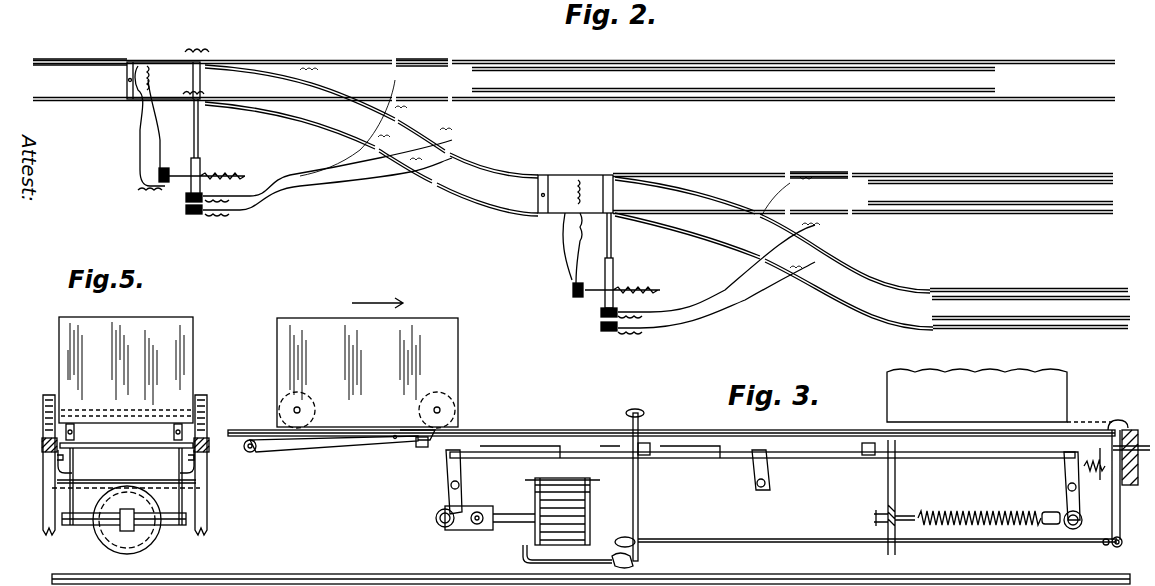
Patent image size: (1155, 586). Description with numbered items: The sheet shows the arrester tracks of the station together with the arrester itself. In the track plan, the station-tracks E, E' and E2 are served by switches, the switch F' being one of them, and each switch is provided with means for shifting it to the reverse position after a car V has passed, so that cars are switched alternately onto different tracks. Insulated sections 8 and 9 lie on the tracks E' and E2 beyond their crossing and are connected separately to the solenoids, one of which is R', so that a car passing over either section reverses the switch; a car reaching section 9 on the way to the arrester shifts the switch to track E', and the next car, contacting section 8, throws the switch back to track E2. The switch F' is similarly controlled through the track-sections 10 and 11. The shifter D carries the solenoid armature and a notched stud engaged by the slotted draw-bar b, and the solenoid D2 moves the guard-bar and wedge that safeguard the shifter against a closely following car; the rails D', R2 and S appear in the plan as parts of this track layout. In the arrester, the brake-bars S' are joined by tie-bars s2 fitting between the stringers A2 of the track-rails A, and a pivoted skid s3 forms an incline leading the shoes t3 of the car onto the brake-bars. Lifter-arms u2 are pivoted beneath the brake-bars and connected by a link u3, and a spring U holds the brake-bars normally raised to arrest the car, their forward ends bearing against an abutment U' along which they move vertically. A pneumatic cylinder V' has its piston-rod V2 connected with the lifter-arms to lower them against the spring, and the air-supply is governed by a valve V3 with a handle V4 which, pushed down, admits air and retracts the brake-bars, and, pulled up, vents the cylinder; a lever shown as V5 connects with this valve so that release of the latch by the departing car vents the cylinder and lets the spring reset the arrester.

In FIG. 2, the station-track E2 is at (1018, 62).
In FIG. 2, the rail section D' is at (80, 46).
In FIG. 2, the insulated section 9 is at (430, 62).
In FIG. 2, the brake-bars S' is at (801, 172).
In FIG. 5, the brake-bars S' is at (126, 435).
In FIG. 3, the brake-bars S' is at (762, 430).
In FIG. 2, the station-track E is at (627, 177).
In FIG. 2, the draw-bar b is at (198, 140).
In FIG. 2, the shifter D is at (414, 225).
In FIG. 2, the solenoid D2 is at (160, 178).
In FIG. 2, the solenoid R' is at (483, 234).
In FIG. 2, the relay contact R2 is at (184, 210).
In FIG. 2, the insulated section 8 is at (430, 142).
In FIG. 2, the switch F' is at (575, 178).
In FIG. 2, the station-track E' is at (863, 178).
In FIG. 2, the track-section 11 is at (808, 176).
In FIG. 2, the inner conductor rail S is at (990, 174).
In FIG. 2, the track-section 10 is at (843, 250).
In FIG. 5, the car V is at (126, 370).
In FIG. 3, the car V is at (694, 373).
In FIG. 5, the shoes t3 is at (198, 396).
In FIG. 3, the shoes t3 is at (340, 430).
In FIG. 5, the track-rails A is at (44, 432).
In FIG. 3, the track-rails A is at (1018, 578).
In FIG. 5, the stringers A2 is at (42, 447).
In FIG. 3, the stringers A2 is at (858, 420).
In FIG. 5, the lifter-arms u2 is at (172, 468).
In FIG. 3, the lifter-arms u2 is at (1048, 478).
In FIG. 5, the tie-bars s2 is at (124, 492).
In FIG. 3, the tie-bars s2 is at (858, 470).
In FIG. 3, the skid s3 is at (330, 447).
In FIG. 3, the link u3 is at (732, 444).
In FIG. 5, the pneumatic cylinder V' is at (115, 520).
In FIG. 3, the pneumatic cylinder V' is at (569, 519).
In FIG. 3, the piston-rod V2 is at (512, 514).
In FIG. 3, the valve V3 is at (640, 560).
In FIG. 3, the handle V4 is at (643, 413).
In FIG. 3, the rod V5 is at (745, 538).
In FIG. 3, the spring U is at (978, 497).
In FIG. 3, the abutment U' is at (1105, 463).